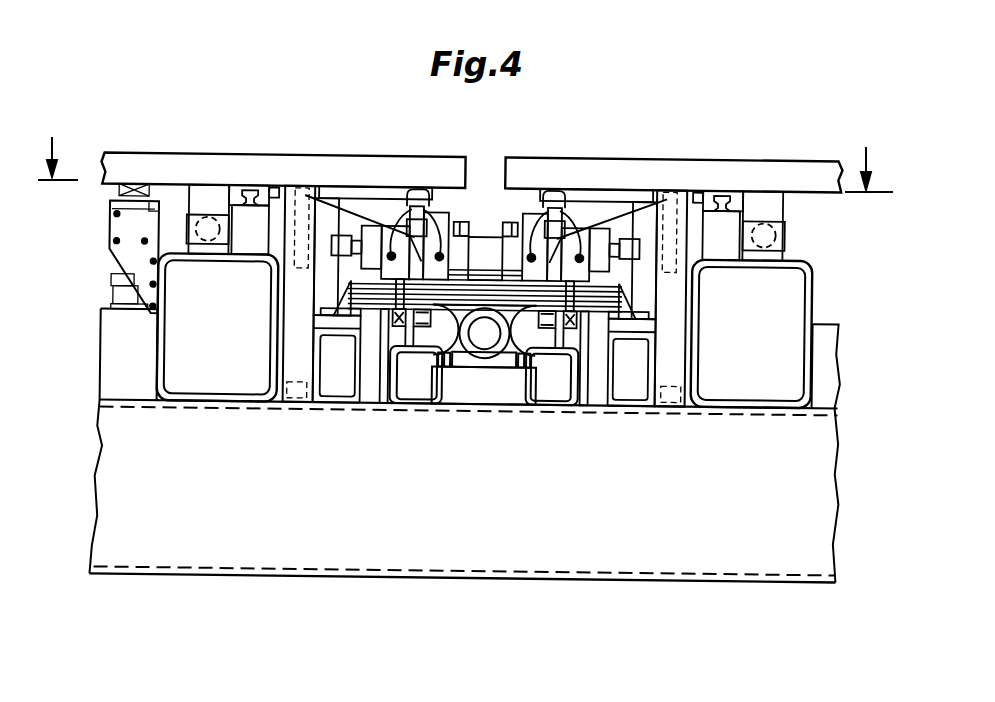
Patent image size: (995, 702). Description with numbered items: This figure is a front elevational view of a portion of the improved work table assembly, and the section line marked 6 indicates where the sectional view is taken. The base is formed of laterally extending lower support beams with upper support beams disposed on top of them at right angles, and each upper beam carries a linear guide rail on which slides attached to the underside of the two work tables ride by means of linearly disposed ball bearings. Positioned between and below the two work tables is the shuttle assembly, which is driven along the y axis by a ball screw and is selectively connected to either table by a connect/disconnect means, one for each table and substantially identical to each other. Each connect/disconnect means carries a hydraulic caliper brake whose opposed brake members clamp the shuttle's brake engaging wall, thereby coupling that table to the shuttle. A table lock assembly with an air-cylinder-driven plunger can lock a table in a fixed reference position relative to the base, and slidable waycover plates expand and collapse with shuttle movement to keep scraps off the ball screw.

The section line 6- 6 is at (465, 149).